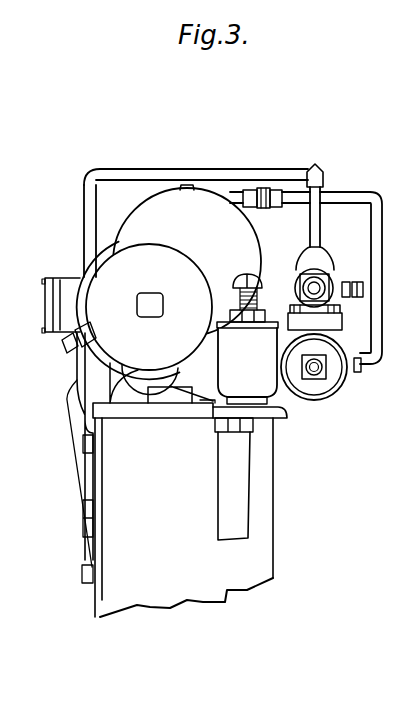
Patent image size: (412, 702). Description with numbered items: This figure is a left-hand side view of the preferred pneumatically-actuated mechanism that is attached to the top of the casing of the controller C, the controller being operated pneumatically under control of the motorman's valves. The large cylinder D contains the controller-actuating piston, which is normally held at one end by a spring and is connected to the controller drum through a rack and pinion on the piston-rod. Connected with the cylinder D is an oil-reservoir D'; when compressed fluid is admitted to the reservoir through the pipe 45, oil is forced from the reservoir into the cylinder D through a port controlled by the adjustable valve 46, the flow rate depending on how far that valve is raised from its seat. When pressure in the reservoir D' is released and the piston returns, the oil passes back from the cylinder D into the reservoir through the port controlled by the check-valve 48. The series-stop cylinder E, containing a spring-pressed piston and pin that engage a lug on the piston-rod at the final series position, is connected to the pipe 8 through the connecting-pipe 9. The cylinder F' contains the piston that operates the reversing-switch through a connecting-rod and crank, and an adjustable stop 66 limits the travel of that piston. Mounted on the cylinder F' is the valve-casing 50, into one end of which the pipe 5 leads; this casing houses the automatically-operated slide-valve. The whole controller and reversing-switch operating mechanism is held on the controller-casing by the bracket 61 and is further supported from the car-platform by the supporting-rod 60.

The pipe 8 is at (190, 168).
The connecting-pipe 9 is at (84, 216).
The pipe 45 is at (374, 264).
The valve-casing 50 is at (321, 265).
The pipe 5 is at (320, 285).
The check-valve 48 is at (272, 322).
The adjustable valve 46 is at (252, 323).
The adjustable stop 66 is at (316, 374).
The supporting-rod 60 is at (243, 478).
The bracket 61 is at (75, 419).
The cylinder E is at (55, 303).
The cylinder D is at (145, 322).
The oil-reservoir D' is at (187, 260).
The cylinder F' is at (328, 374).
The controller C is at (190, 508).